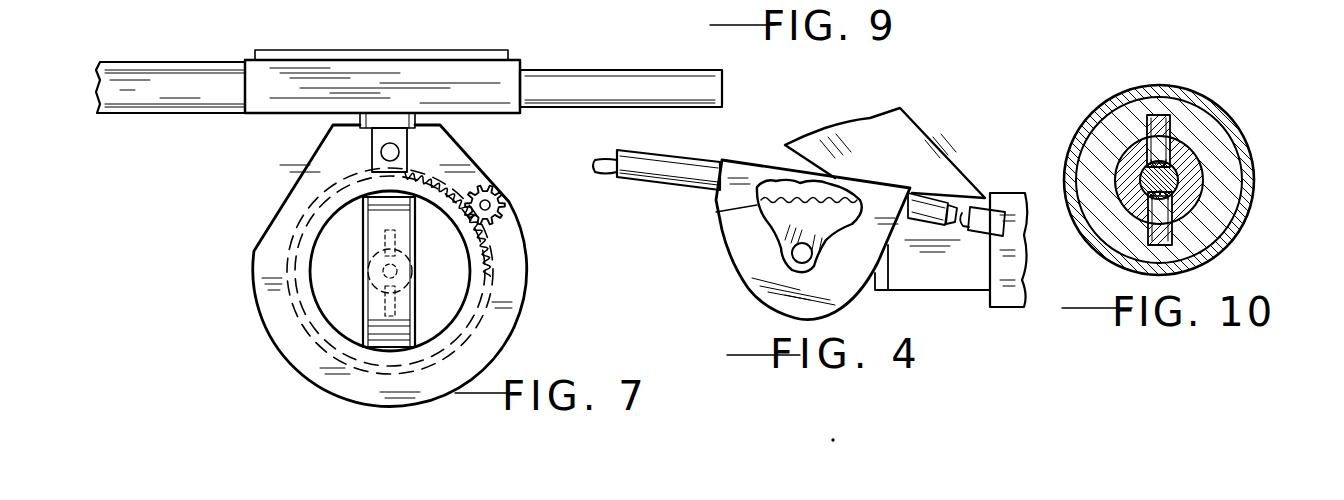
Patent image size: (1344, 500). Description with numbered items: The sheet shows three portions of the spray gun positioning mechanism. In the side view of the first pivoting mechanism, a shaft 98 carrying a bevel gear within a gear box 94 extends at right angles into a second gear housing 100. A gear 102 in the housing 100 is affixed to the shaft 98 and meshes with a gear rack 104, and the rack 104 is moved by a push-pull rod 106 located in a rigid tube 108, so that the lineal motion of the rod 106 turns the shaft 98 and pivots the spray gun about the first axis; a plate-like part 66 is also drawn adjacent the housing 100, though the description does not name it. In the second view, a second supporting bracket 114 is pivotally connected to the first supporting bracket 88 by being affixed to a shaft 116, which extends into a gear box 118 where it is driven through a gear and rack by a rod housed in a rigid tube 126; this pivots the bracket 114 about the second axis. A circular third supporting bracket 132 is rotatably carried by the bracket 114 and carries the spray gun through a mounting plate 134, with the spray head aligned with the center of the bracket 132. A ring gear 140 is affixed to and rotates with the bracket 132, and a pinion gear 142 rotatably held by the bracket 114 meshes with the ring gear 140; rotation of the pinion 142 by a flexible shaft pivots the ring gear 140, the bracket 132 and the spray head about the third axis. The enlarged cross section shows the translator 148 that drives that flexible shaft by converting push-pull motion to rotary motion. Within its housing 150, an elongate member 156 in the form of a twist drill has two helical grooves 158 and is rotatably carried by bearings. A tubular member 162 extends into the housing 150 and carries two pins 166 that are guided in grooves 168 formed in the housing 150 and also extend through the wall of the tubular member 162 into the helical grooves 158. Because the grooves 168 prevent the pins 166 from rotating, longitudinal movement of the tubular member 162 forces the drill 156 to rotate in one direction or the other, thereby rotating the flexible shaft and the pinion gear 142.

In FIG. 7, the first supporting bracket 88 is at (216, 62).
In FIG. 7, the gear box 118 is at (411, 50).
In FIG. 7, the rigid tube 126 is at (648, 70).
In FIG. 7, the shaft 116 is at (420, 122).
In FIG. 7, the second supporting bracket 114 is at (527, 285).
In FIG. 7, the third supporting bracket 132 is at (287, 253).
In FIG. 7, the ring gear 140 is at (488, 236).
In FIG. 7, the pinion gear 142 is at (535, 190).
In FIG. 7, the mounting plate 134 is at (365, 310).
In FIG. 4, the rigid tube 108 is at (668, 158).
In FIG. 4, the second gear housing 100 is at (760, 142).
In FIG. 4, the gear rack 104 is at (858, 186).
In FIG. 4, the shaft 98 is at (792, 253).
In FIG. 4, the gear 102 is at (757, 197).
In FIG. 4, the plate 66 is at (912, 120).
In FIG. 4, the push-pull rod 106 is at (948, 210).
In FIG. 4, the gear box 94 is at (866, 292).
In FIG. 10, the translator 148 is at (1086, 98).
In FIG. 10, the housing 150 is at (1238, 140).
In FIG. 10, the tubular member 162 is at (1204, 170).
In FIG. 10, the elongate member 156 is at (1178, 186).
In FIG. 10, the pins 166 is at (1170, 146).
In FIG. 10, the helical grooves 158 is at (1156, 165).
In FIG. 10, the grooves 168 is at (1160, 116).